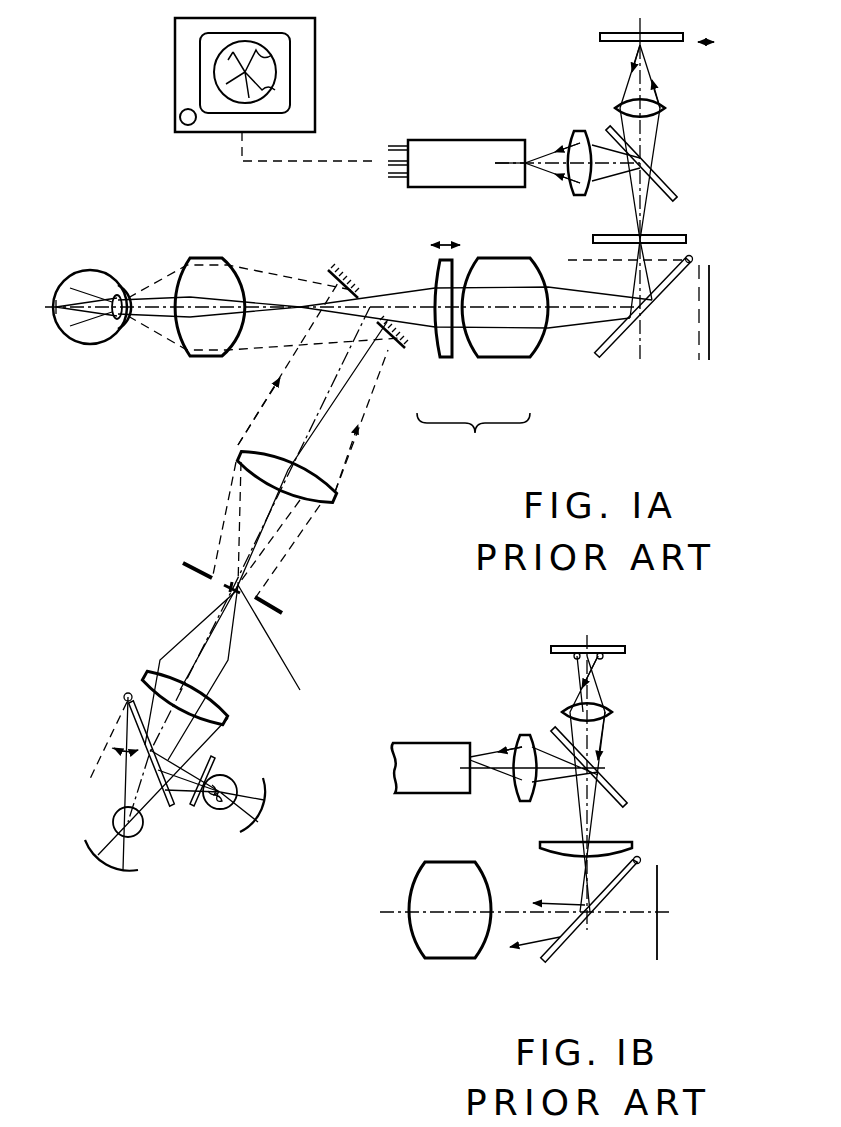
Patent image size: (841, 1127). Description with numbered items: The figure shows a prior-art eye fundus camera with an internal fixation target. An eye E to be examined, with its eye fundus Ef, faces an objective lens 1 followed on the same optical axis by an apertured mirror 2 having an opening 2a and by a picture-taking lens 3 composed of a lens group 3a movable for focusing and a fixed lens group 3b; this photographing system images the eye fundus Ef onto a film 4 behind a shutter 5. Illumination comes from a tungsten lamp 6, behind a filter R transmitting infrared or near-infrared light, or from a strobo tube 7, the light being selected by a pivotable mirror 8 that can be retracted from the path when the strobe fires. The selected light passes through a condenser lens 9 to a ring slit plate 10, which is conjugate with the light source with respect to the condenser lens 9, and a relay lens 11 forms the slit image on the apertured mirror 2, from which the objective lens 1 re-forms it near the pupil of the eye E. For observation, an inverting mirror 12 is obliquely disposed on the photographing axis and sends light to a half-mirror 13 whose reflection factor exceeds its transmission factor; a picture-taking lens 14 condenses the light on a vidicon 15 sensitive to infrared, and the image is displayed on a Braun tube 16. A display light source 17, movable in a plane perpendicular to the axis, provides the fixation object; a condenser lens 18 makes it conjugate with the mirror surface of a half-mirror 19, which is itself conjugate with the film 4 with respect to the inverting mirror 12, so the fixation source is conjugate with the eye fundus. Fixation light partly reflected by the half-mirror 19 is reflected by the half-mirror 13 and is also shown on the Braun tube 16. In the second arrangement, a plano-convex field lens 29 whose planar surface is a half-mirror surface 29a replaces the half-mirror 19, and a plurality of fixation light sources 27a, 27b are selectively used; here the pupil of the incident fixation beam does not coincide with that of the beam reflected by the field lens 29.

In FIG. 1A, the objective lens 1 is at (210, 258).
In FIG. 1A, the apertured mirror 2 is at (330, 270).
In FIG. 1A, the opening in the apertured mirror 2a is at (358, 296).
In FIG. 1A, the picture-taking lens 3 is at (473, 437).
In FIG. 1A, the lens group movable for focusing 3a is at (443, 360).
In FIG. 1A, the fixed lens group 3b is at (508, 360).
In FIG. 1B, the fixed lens group 3b is at (462, 862).
In FIG. 1A, the film 4 is at (709, 355).
In FIG. 1B, the film 4 is at (660, 942).
In FIG. 1A, the shutter 5 is at (699, 355).
In FIG. 1A, the tungsten lamp 6 is at (222, 810).
In FIG. 1A, the strobo tube 7 is at (143, 828).
In FIG. 1A, the pivotable mirror 8 is at (120, 695).
In FIG. 1A, the condenser lens 9 is at (232, 720).
In FIG. 1A, the ring slit plate 10 is at (283, 611).
In FIG. 1A, the relay lens 11 is at (340, 497).
In FIG. 1A, the inverting mirror 12 is at (612, 356).
In FIG. 1B, the inverting mirror 12 is at (565, 940).
In FIG. 1A, the half-mirror 13 is at (662, 183).
In FIG. 1B, the half-mirror 13 is at (615, 790).
In FIG. 1A, the picture-taking lens 14 is at (580, 133).
In FIG. 1B, the picture-taking lens 14 is at (520, 737).
In FIG. 1A, the vidicon 15 is at (462, 140).
In FIG. 1B, the vidicon 15 is at (430, 742).
In FIG. 1A, the Braun tube 16 is at (292, 66).
In FIG. 1A, the display light source 17 is at (645, 47).
In FIG. 1A, the condenser lens 18 is at (665, 108).
In FIG. 1B, the condenser lens 18 is at (612, 712).
In FIG. 1A, the half-mirror 19 is at (683, 235).
In FIG. 1A, the eye to be examined E is at (104, 268).
In FIG. 1A, the eye fundus Ef is at (58, 335).
In FIG. 1A, the filter R is at (216, 758).
In FIG. 1B, the fixation light source 27a is at (604, 658).
In FIG. 1B, the fixation light source 27b is at (573, 658).
In FIG. 1B, the field lens 29 is at (633, 847).
In FIG. 1B, the half-mirror surface 29a is at (615, 840).